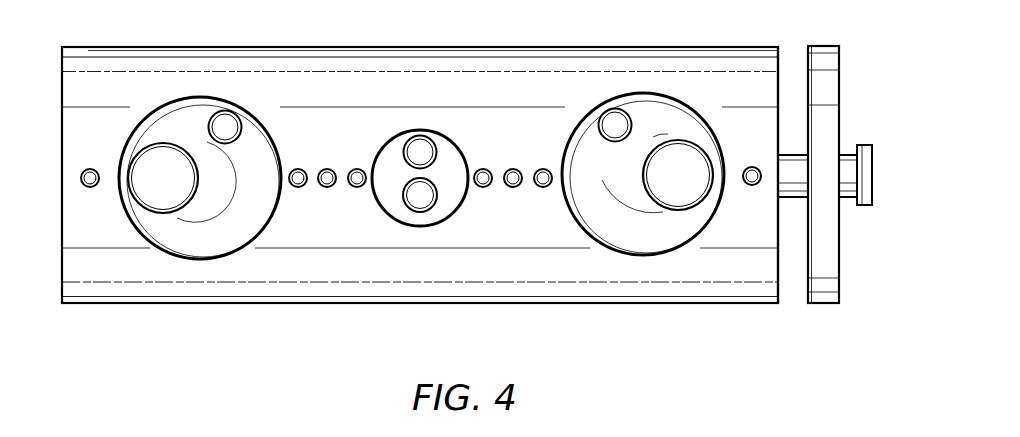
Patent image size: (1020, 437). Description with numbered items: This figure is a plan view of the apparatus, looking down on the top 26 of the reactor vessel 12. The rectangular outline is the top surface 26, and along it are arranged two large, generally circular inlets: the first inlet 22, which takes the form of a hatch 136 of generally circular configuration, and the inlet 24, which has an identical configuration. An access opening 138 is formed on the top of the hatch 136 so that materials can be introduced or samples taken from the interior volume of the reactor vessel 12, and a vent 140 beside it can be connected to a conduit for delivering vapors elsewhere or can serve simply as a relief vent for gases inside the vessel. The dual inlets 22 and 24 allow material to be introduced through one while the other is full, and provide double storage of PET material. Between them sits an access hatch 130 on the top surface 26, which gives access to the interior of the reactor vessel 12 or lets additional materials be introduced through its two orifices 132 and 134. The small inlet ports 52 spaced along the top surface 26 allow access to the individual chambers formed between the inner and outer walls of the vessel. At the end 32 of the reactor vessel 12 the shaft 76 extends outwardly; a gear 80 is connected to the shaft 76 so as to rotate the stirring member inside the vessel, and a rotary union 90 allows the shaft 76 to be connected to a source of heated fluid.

The reactor vessel 12 is at (440, 47).
The top surface 26 is at (622, 58).
The end 32 is at (783, 293).
The first inlet 22 is at (237, 225).
The inlet 24 is at (672, 120).
The inlet ports 52 is at (88, 169).
The shaft 76 is at (848, 154).
The gear 80 is at (827, 62).
The rotary union 90 is at (870, 182).
The access hatch 130 is at (462, 200).
The orifice 132 is at (423, 147).
The orifice 134 is at (412, 198).
The hatch 136 is at (155, 110).
The access opening 138 is at (153, 202).
The vent 140 is at (228, 124).